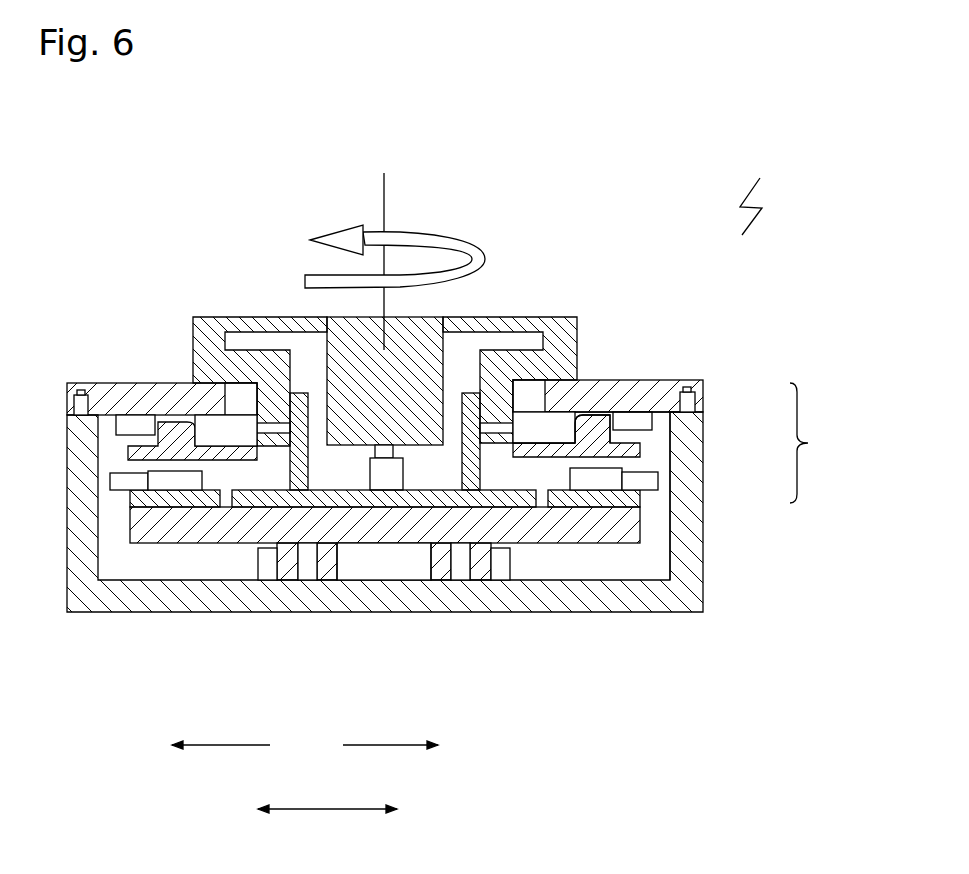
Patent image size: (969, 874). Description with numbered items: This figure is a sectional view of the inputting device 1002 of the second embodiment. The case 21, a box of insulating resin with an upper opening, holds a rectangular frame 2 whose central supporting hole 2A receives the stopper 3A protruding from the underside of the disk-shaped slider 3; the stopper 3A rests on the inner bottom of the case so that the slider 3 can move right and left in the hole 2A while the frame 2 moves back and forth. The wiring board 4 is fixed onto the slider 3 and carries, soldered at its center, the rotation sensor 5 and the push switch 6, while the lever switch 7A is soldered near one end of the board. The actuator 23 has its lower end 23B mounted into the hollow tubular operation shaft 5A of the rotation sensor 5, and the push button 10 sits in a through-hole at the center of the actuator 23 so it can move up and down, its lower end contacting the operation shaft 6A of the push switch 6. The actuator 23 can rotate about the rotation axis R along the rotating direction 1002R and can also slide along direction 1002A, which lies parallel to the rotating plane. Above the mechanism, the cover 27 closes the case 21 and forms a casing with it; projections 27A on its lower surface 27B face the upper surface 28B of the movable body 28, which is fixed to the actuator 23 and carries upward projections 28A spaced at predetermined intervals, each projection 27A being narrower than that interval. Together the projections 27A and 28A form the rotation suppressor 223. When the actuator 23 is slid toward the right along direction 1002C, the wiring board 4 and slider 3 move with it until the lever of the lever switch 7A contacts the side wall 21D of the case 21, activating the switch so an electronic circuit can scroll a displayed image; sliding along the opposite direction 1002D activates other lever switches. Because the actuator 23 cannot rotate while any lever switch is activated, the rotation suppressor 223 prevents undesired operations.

The rotation axis R is at (382, 208).
The rotating direction 1002R is at (422, 248).
The inputting device 1002 is at (771, 193).
The actuator 23 is at (207, 330).
The lower end of actuator 23B is at (273, 423).
The push button 10 is at (482, 316).
The operation shaft 5A is at (470, 403).
The rotation sensor 5 is at (493, 477).
The upper surface of movable body 28B is at (553, 441).
The lower surface of cover 27B is at (615, 412).
The cover 27 is at (677, 383).
The projections 27A is at (637, 422).
The projections 28A is at (595, 430).
The movable body 28 is at (607, 440).
The rotation suppressor 223 is at (825, 443).
The side wall of case 21D is at (693, 543).
The case 21 is at (675, 597).
The frame 2 is at (285, 573).
The supporting hole 2A is at (308, 568).
The push switch 6 is at (383, 477).
The operation shaft 6A is at (390, 452).
The stopper 3A is at (449, 563).
The slider 3 is at (532, 527).
The wiring board 4 is at (588, 499).
The lever switch 7A is at (597, 480).
The direction 1002D is at (233, 747).
The direction 1002C is at (393, 747).
The direction 1002A is at (343, 810).